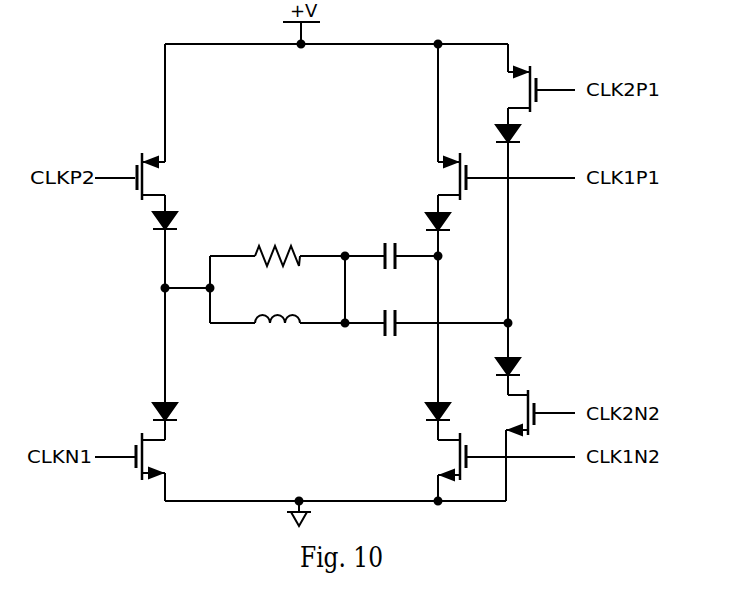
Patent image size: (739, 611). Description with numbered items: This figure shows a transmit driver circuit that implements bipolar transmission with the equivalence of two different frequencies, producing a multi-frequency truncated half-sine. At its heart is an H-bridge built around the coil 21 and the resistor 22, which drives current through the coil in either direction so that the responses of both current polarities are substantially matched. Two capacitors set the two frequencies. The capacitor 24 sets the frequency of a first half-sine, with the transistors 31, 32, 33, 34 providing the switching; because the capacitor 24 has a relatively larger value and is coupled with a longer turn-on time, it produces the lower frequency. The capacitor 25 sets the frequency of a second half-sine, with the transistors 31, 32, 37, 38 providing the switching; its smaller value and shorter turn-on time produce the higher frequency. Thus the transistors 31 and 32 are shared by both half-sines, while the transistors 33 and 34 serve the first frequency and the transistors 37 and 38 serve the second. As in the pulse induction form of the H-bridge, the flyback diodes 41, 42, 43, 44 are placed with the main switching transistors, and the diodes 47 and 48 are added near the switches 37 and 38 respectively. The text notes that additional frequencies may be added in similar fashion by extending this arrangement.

The coil 21 is at (277, 310).
The resistor 22 is at (277, 241).
The capacitor 24 is at (382, 248).
The capacitor 25 is at (378, 328).
The transistor 31 is at (163, 178).
The transistor 32 is at (162, 457).
The transistor 33 is at (440, 178).
The transistor 34 is at (437, 457).
The transistor 37 is at (508, 89).
The transistor 38 is at (507, 412).
The flyback diode 41 is at (149, 220).
The flyback diode 42 is at (149, 410).
The flyback diode 43 is at (453, 222).
The flyback diode 44 is at (420, 412).
The diode 47 is at (521, 134).
The diode 48 is at (521, 368).